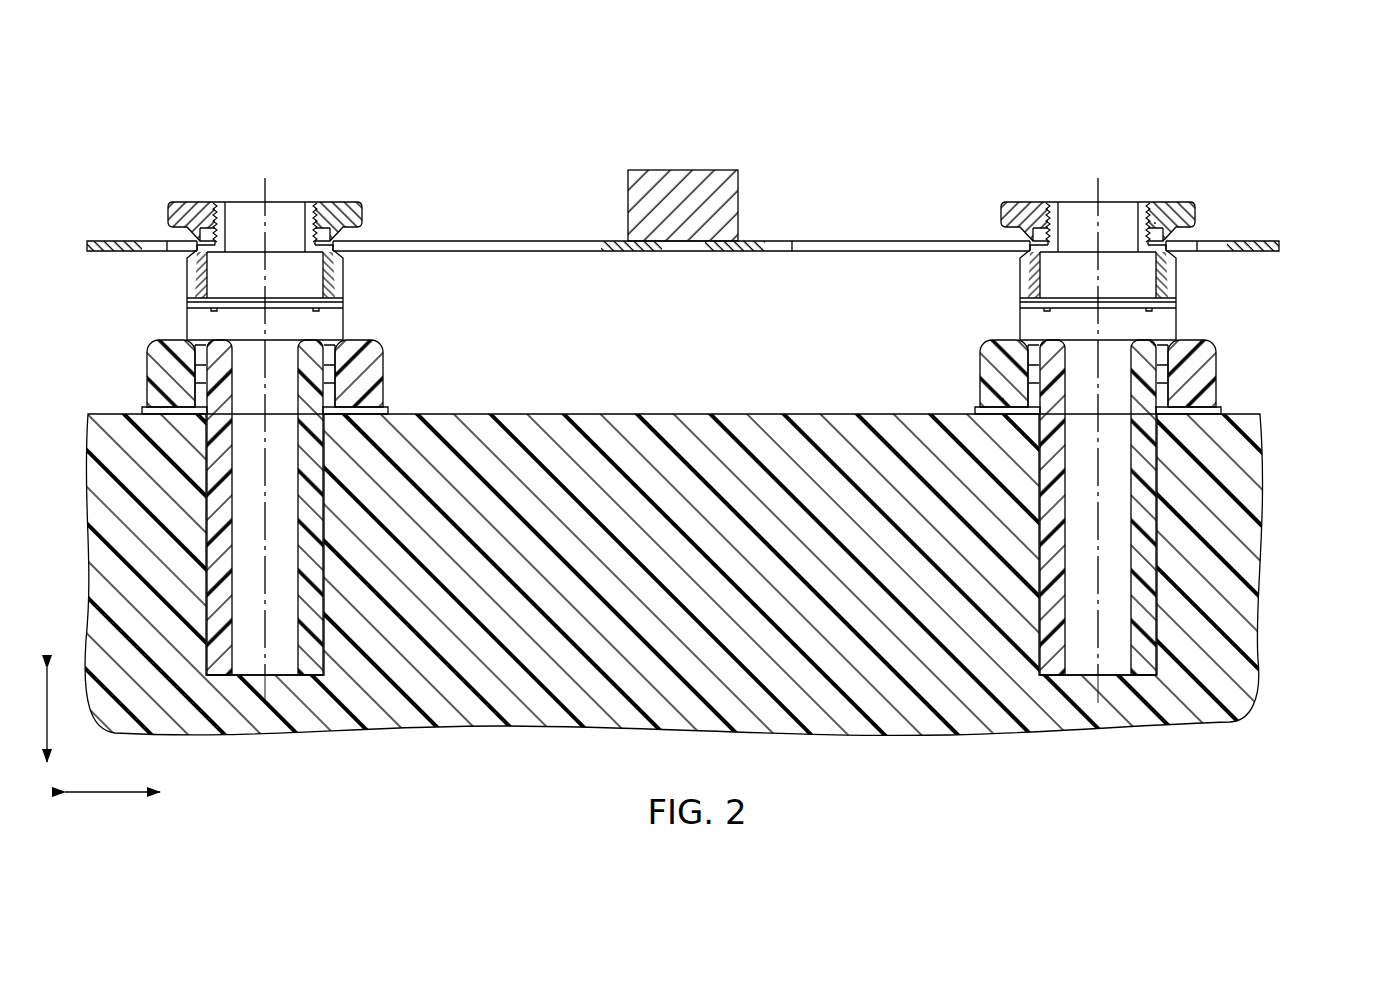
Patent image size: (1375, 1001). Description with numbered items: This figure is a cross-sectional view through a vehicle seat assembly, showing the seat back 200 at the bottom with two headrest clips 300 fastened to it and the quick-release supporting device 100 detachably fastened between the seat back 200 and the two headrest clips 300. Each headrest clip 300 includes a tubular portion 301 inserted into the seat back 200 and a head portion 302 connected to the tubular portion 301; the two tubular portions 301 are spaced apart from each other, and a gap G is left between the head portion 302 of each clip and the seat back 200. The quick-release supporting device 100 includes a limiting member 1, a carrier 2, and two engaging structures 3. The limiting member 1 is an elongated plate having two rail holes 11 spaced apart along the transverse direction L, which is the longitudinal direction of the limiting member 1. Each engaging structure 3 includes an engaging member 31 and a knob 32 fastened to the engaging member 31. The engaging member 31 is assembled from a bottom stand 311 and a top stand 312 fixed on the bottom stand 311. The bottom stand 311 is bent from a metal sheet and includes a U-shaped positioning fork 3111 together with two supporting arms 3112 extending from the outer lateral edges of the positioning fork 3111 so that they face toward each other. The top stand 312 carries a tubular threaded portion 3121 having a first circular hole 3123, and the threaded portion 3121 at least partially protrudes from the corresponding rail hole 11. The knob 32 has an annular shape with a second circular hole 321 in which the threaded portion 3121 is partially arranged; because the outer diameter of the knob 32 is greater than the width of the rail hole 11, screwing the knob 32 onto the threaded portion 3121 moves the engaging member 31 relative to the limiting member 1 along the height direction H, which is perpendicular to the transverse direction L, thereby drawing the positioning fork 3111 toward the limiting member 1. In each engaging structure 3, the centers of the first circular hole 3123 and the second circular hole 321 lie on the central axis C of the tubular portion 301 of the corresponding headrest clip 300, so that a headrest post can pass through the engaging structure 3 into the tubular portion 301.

The quick-release supporting device 100 is at (120, 238).
The limiting member 1 is at (1258, 240).
The rail hole 11 is at (462, 240).
The carrier 2 is at (680, 170).
The seat back 200 is at (660, 412).
The headrest clip 300 is at (718, 507).
The tubular portion 301 is at (1145, 518).
The head portion 302 is at (1165, 378).
The engaging structure 3 is at (749, 256).
The engaging member 31 is at (749, 256).
The bottom stand 311 is at (749, 356).
The positioning fork 3111 is at (717, 386).
The supporting arm 3112 is at (1162, 322).
The top stand 312 is at (681, 198).
The threaded portion 3121 is at (1040, 218).
The first circular hole 3123 is at (977, 137).
The knob 32 is at (681, 194).
The second circular hole 321 is at (1155, 222).
The central axis C is at (262, 190).
The gap G is at (1003, 398).
The height direction H is at (27, 715).
The transverse direction L is at (112, 774).